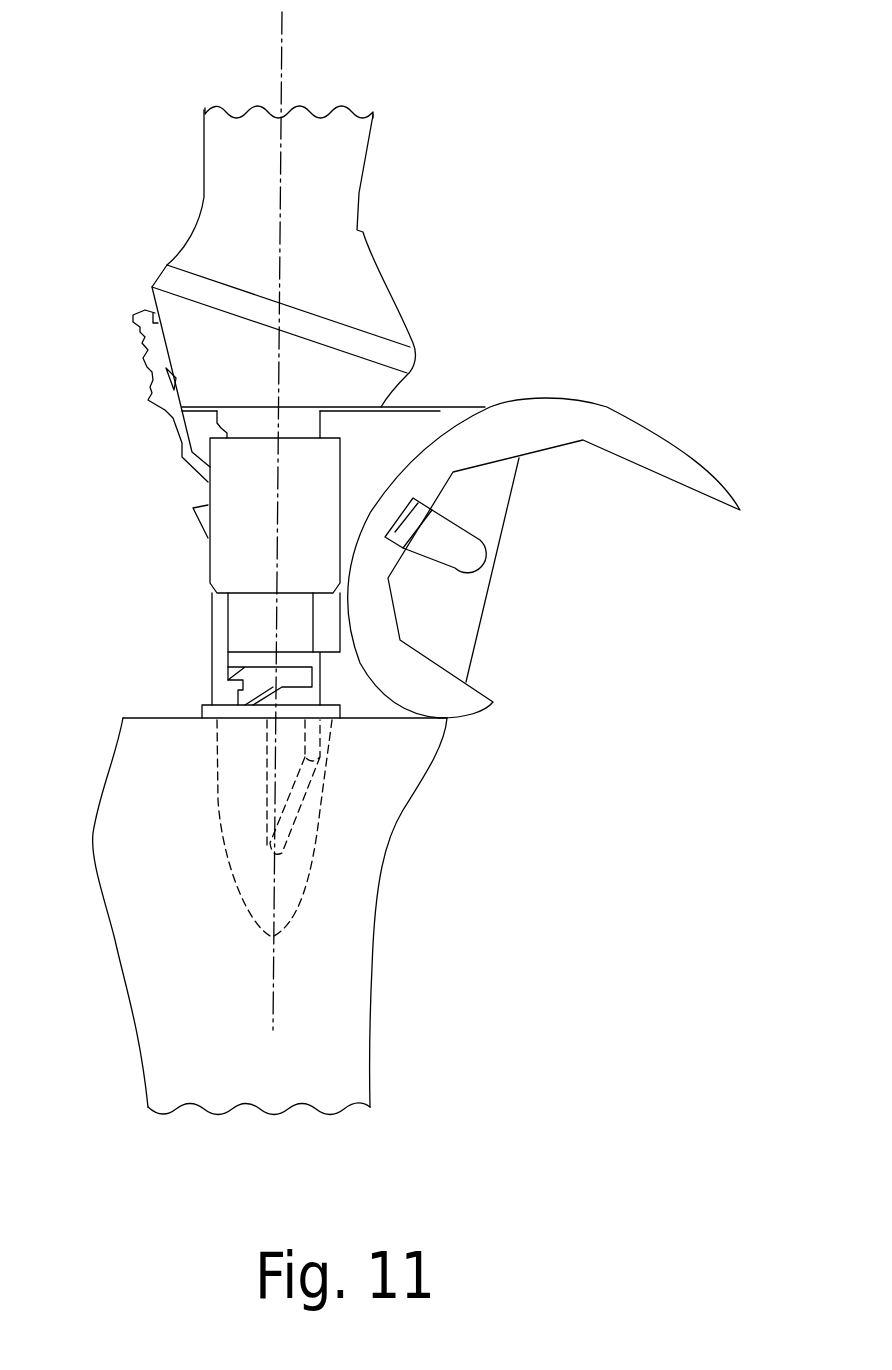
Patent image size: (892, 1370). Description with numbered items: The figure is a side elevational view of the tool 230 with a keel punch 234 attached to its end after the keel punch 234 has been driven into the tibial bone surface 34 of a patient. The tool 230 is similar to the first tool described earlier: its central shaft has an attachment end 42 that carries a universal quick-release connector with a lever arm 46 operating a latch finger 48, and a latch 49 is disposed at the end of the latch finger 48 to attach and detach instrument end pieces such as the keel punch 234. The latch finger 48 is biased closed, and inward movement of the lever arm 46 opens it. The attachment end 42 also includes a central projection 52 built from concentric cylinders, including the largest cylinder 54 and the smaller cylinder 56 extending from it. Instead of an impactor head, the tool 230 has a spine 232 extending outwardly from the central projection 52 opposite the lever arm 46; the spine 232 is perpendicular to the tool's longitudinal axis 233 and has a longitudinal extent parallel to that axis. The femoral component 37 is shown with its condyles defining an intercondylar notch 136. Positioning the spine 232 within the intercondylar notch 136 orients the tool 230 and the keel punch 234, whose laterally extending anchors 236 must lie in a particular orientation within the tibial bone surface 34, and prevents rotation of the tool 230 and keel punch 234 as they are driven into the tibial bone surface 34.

The longitudinal axis 233 is at (282, 50).
The tool 230 is at (448, 257).
The attachment end 42 is at (397, 343).
The lever arm 46 is at (143, 350).
The spine 232 is at (443, 407).
The intercondylar notch 136 is at (383, 452).
The cylinder 54 is at (208, 487).
The central projection 52 is at (223, 562).
The latch finger 48 is at (217, 610).
The cylinder 56 is at (242, 625).
The latch 49 is at (227, 688).
The tibial bone surface 34 is at (140, 755).
The keel punch 234 is at (300, 857).
The laterally extending anchors 236 is at (307, 793).
The femoral component 37 is at (668, 415).